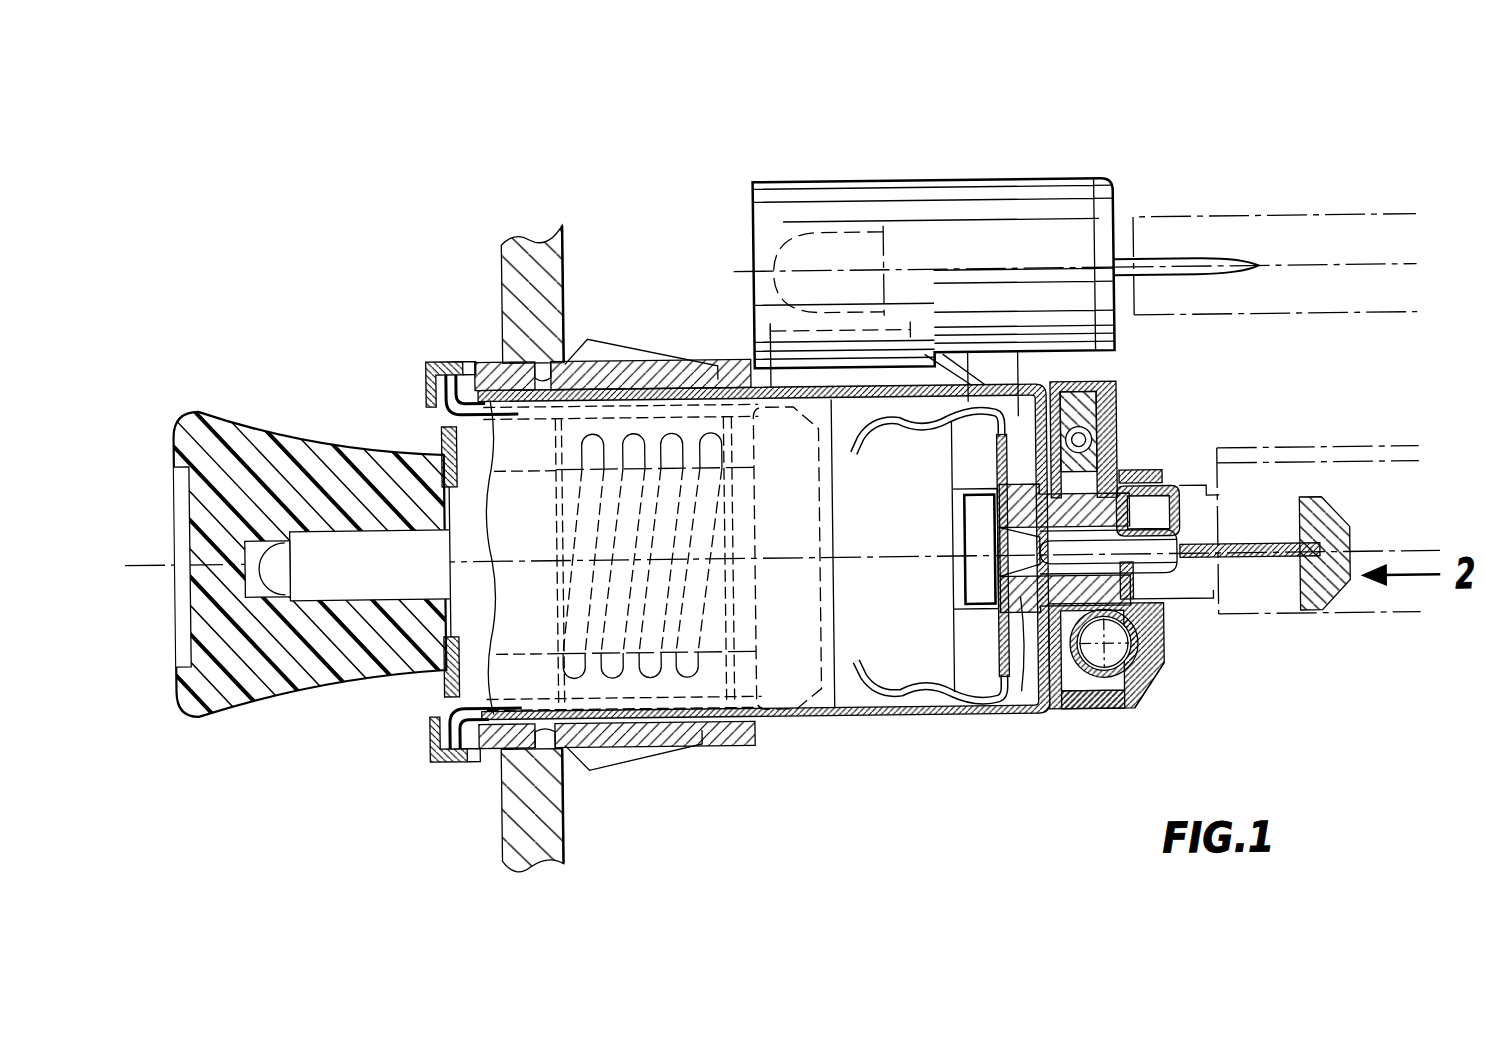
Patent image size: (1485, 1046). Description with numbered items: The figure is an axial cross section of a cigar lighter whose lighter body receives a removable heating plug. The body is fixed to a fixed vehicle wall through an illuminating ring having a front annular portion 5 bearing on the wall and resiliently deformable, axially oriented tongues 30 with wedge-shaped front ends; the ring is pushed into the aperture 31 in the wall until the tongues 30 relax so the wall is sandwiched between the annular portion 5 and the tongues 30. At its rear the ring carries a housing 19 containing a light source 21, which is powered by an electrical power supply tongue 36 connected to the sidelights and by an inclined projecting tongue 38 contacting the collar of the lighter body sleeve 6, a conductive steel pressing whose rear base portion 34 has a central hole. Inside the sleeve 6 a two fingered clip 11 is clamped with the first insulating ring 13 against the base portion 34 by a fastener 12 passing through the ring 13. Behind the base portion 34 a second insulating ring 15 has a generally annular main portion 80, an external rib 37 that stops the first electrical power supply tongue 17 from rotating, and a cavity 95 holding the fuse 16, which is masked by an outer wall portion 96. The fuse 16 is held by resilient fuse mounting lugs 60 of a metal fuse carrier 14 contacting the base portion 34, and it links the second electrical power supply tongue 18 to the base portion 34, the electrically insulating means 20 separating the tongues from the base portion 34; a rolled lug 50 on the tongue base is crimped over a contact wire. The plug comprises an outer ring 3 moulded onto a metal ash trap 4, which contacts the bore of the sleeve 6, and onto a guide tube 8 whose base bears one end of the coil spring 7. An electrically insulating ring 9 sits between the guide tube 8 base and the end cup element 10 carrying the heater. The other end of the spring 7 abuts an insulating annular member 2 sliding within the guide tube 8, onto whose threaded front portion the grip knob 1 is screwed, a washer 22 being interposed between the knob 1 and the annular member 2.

The grip knob 1 is at (213, 680).
The annular member 2 is at (317, 573).
The outer ring 3 is at (432, 737).
The ash trap 4 is at (455, 745).
The annular portion 5 is at (500, 757).
The lighter body sleeve 6 is at (582, 733).
The coil spring 7 is at (650, 668).
The guide tube 8 is at (690, 682).
The electrically insulating ring 9 is at (742, 662).
The end cup element 10 is at (790, 640).
The two fingered clip 11 is at (877, 700).
The fastener 12 is at (983, 593).
The first insulating ring 13 is at (1003, 585).
The fuse carrier 14 is at (1067, 714).
The second insulating ring 15 is at (1107, 713).
The fuse 16 is at (1137, 700).
The first electrical power supply tongue 17 is at (1245, 566).
The second electrical power supply tongue 18 is at (1310, 582).
The housing 19 is at (1053, 237).
The electrically insulating means 20 is at (1117, 387).
The light source 21 is at (846, 254).
The washer 22 is at (448, 440).
The resiliently deformable tongues 30 is at (628, 360).
The aperture 31 is at (553, 357).
The base portion 34 is at (1020, 420).
The electrical power supply tongue 36 is at (1188, 260).
The rib 37 is at (1160, 475).
The inclined projecting tongue 38 is at (970, 405).
The rolled lug 50 is at (1118, 453).
The fuse mounting lugs 60 is at (1163, 679).
The main portion 80 is at (1120, 463).
The cavity 95 is at (1163, 642).
The wall portion 96 is at (1150, 695).